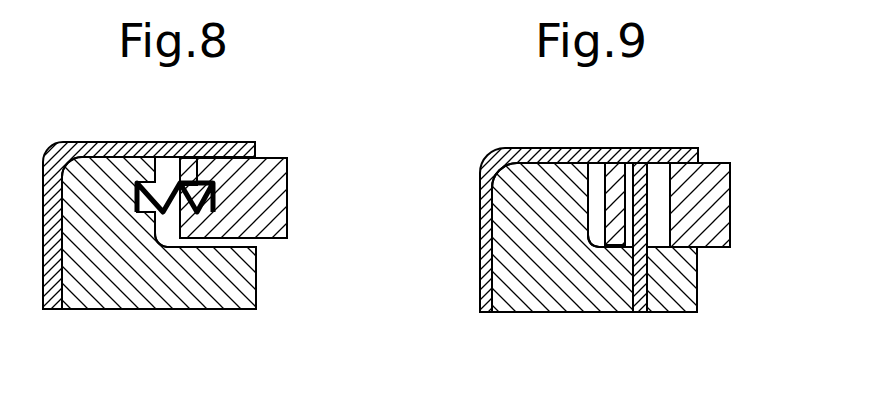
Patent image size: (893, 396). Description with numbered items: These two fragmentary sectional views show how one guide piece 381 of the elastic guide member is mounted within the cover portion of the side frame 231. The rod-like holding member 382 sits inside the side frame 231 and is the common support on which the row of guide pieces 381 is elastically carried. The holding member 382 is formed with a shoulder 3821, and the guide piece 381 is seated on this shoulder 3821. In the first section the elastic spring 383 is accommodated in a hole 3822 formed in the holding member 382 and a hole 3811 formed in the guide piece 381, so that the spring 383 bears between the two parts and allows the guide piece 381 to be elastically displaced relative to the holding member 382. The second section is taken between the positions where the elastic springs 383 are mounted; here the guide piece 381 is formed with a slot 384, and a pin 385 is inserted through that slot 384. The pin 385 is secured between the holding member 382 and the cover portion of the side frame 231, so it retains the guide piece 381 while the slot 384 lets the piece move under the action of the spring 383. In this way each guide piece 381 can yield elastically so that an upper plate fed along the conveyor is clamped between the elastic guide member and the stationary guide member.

In FIG. 8, the side frame 231 is at (97, 142).
In FIG. 9, the side frame 231 is at (668, 148).
In FIG. 8, the guide piece 381 is at (268, 190).
In FIG. 9, the guide piece 381 is at (717, 228).
In FIG. 8, the hole 3811 is at (232, 143).
In FIG. 8, the holding member 382 is at (248, 273).
In FIG. 9, the holding member 382 is at (522, 280).
In FIG. 8, the shoulder 3821 is at (164, 243).
In FIG. 9, the shoulder 3821 is at (600, 250).
In FIG. 8, the hole 3822 is at (158, 183).
In FIG. 8, the elastic spring 383 is at (172, 162).
In FIG. 9, the slot 384 is at (660, 190).
In FIG. 9, the pin 385 is at (643, 164).